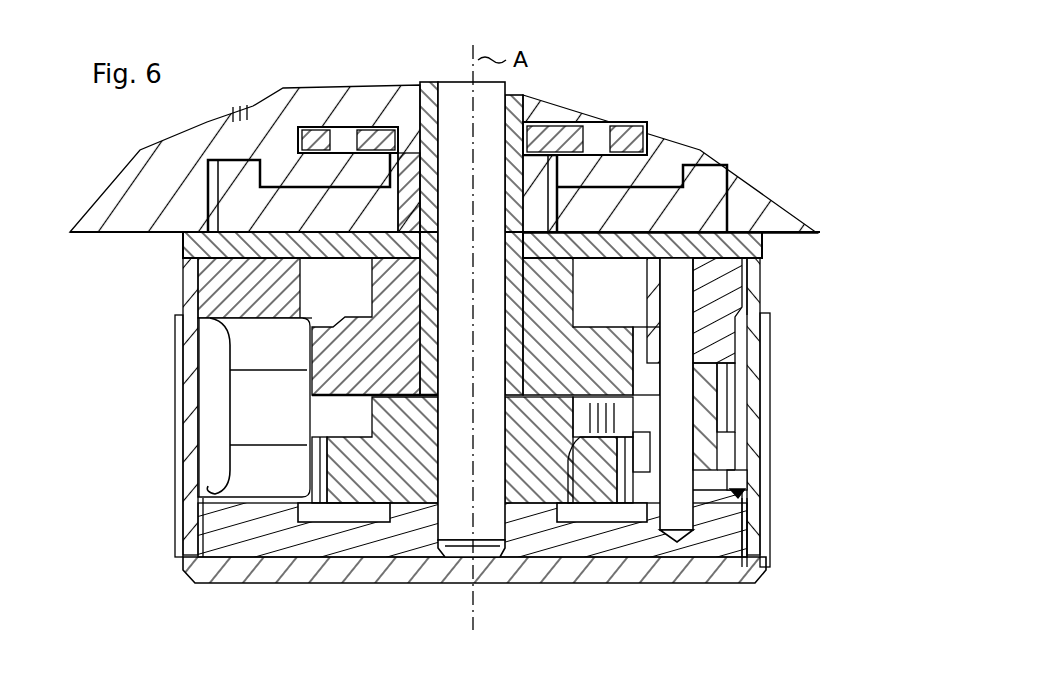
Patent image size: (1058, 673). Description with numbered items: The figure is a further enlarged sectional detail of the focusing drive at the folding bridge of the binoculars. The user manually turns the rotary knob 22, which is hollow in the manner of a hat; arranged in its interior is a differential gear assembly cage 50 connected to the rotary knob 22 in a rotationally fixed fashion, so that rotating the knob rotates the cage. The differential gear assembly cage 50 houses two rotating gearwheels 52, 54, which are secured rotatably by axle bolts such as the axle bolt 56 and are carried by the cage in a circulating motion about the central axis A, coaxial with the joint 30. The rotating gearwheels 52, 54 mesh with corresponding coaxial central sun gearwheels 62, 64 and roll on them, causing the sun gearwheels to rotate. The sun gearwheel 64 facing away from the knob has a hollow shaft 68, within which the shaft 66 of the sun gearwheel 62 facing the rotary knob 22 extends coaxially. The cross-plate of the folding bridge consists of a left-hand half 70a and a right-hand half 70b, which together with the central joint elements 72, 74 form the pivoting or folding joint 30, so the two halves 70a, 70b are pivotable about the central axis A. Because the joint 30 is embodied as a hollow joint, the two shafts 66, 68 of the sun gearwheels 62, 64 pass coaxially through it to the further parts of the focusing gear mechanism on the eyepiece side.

The rotary knob 22 is at (668, 585).
The joint 30 is at (405, 162).
The differential gear assembly cage 50 is at (750, 291).
The rotating gearwheel 52 is at (588, 428).
The rotating gearwheel 54 is at (735, 395).
The axle bolt 56 is at (720, 452).
The sun gearwheel 62 is at (742, 496).
The sun gearwheel 64 is at (612, 350).
The shaft 66 is at (452, 82).
The hollow shaft 68 is at (430, 84).
The left-hand half of cross-plate 70a is at (131, 166).
The right-hand half of cross-plate 70b is at (766, 199).
The central joint element 72 is at (763, 256).
The central joint element 74 is at (632, 126).